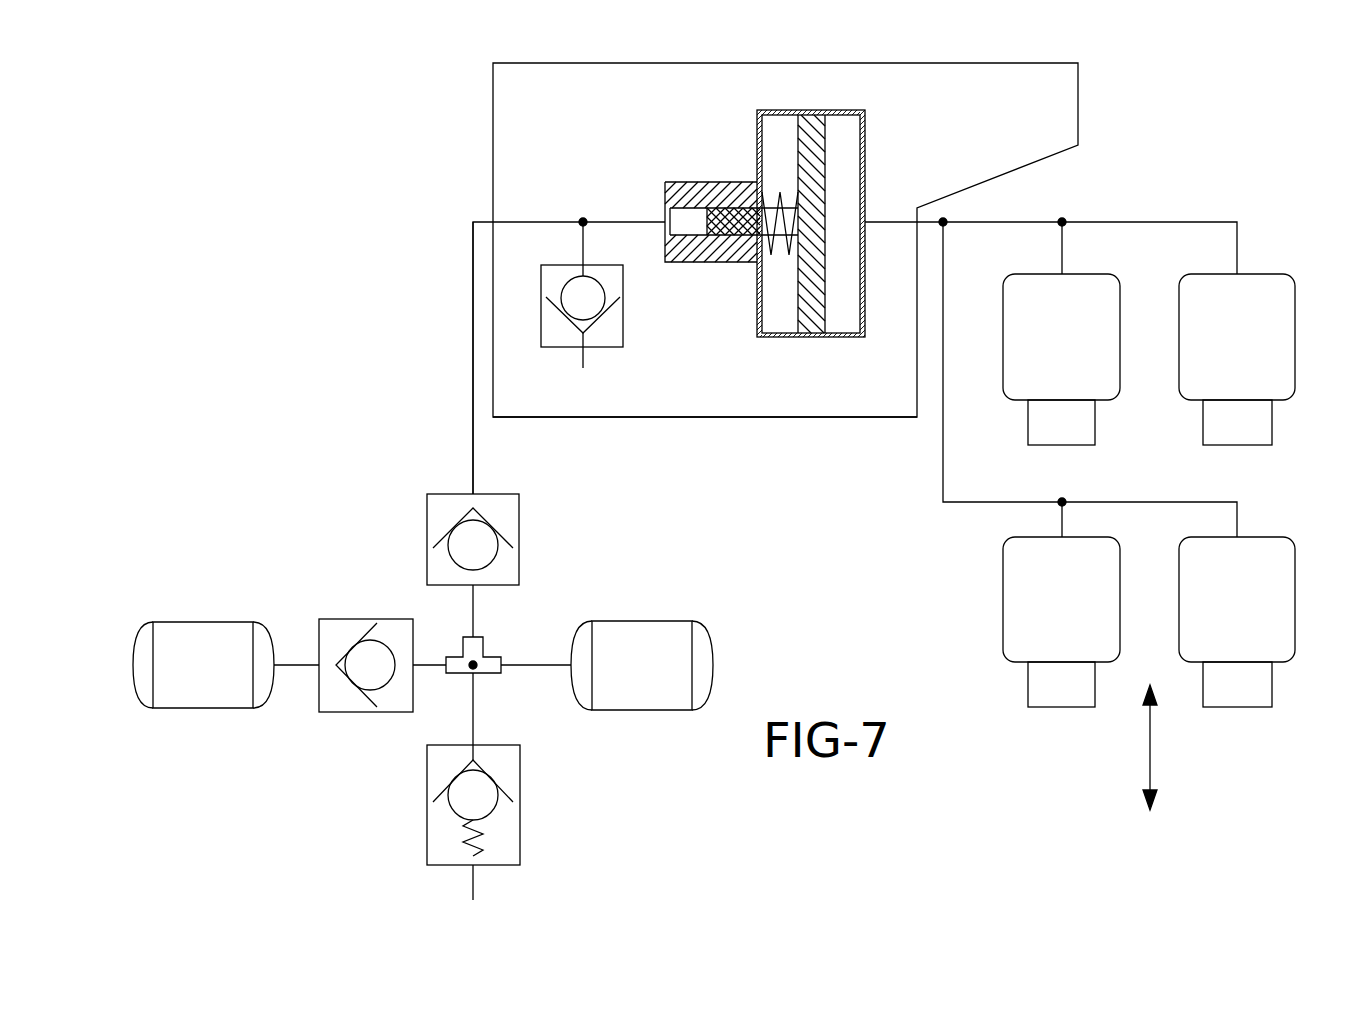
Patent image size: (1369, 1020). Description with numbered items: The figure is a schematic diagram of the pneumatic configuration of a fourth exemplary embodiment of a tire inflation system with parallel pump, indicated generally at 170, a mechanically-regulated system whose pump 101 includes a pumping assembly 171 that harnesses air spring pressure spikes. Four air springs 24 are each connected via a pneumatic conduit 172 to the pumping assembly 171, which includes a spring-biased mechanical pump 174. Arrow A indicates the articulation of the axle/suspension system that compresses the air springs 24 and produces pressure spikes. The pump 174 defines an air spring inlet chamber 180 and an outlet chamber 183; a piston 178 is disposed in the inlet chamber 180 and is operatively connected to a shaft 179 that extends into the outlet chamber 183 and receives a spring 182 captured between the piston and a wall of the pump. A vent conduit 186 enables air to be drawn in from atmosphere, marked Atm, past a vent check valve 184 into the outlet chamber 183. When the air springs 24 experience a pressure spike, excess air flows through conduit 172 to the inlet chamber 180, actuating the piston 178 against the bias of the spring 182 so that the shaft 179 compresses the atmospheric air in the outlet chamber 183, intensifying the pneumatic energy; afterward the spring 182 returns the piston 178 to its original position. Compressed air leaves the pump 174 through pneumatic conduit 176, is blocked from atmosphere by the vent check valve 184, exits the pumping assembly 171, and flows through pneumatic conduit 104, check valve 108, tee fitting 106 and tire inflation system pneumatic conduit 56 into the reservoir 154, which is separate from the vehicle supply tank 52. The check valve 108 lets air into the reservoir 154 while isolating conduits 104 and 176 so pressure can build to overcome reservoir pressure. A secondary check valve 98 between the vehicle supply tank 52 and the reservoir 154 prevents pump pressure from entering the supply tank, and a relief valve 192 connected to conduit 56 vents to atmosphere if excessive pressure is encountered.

The tire inflation system 170 is at (337, 196).
The pump 101 is at (665, 418).
The pumping assembly 171 is at (777, 418).
The mechanical pump 174 is at (855, 107).
The pneumatic conduit 176 is at (556, 221).
The piston 178 is at (826, 180).
The shaft 179 is at (726, 215).
The air spring inlet chamber 180 is at (853, 134).
The spring 182 is at (786, 190).
The outlet chamber 183 is at (692, 214).
The vent check valve 184 is at (612, 347).
The vent conduit 186 is at (583, 240).
The pneumatic conduit 172 is at (1010, 222).
The air spring 24 is at (1045, 353).
The pneumatic conduit 104 is at (473, 445).
The check valve 108 is at (497, 494).
The tee fitting 106 is at (492, 653).
The secondary check valve 98 is at (352, 620).
The vehicle supply tank 52 is at (186, 682).
The reservoir 154 is at (618, 682).
The tire inflation system pneumatic conduit 56 is at (541, 672).
The relief valve 192 is at (520, 833).
The arrow A is at (1150, 750).